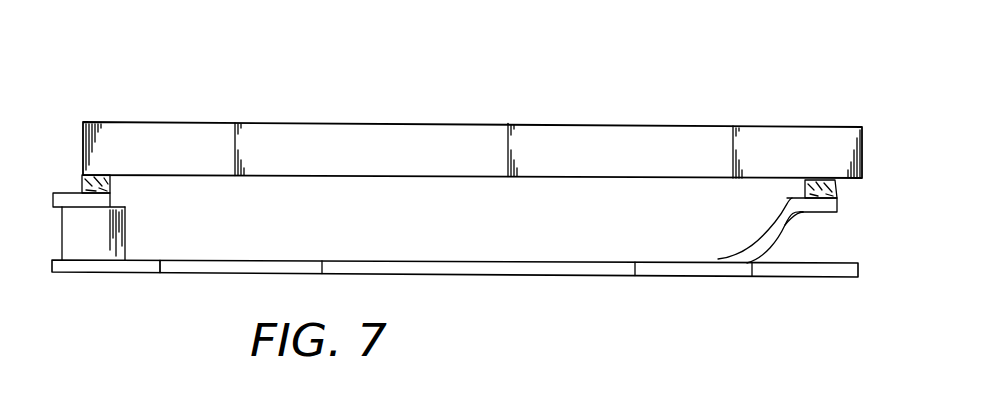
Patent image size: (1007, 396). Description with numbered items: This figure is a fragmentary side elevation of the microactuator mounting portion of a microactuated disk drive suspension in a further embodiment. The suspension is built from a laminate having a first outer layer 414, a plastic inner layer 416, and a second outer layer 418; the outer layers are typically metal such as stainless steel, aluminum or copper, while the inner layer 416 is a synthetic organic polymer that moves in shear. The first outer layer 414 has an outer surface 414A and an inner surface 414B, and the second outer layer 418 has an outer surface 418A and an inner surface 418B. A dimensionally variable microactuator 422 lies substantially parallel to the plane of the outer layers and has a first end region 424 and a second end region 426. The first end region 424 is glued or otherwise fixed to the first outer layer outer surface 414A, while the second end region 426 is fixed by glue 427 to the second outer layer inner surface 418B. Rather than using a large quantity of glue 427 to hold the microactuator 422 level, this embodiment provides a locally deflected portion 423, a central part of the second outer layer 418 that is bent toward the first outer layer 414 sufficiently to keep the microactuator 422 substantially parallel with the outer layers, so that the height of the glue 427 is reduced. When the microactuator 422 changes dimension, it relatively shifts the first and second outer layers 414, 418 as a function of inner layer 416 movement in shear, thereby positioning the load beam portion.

The first outer layer 414 is at (105, 200).
The outer surface of first outer layer 414A is at (65, 197).
The inner surface of first outer layer 414B is at (65, 197).
The inner layer 416 is at (128, 240).
The second outer layer 418 is at (538, 277).
The outer surface of second outer layer 418A is at (212, 274).
The inner surface of second outer layer 418B is at (840, 190).
The dimensionally variable microactuator 422 is at (527, 123).
The locally deflected portion of second outer layer 423 is at (800, 213).
The first end region of microactuator 424 is at (100, 122).
The second end region of microactuator 426 is at (847, 133).
The glue 427 is at (792, 196).